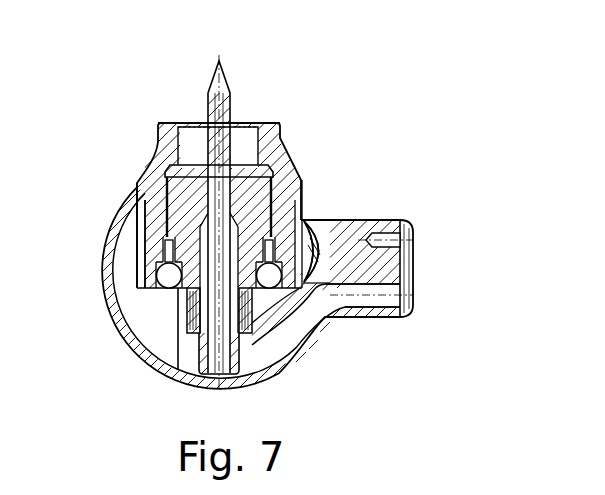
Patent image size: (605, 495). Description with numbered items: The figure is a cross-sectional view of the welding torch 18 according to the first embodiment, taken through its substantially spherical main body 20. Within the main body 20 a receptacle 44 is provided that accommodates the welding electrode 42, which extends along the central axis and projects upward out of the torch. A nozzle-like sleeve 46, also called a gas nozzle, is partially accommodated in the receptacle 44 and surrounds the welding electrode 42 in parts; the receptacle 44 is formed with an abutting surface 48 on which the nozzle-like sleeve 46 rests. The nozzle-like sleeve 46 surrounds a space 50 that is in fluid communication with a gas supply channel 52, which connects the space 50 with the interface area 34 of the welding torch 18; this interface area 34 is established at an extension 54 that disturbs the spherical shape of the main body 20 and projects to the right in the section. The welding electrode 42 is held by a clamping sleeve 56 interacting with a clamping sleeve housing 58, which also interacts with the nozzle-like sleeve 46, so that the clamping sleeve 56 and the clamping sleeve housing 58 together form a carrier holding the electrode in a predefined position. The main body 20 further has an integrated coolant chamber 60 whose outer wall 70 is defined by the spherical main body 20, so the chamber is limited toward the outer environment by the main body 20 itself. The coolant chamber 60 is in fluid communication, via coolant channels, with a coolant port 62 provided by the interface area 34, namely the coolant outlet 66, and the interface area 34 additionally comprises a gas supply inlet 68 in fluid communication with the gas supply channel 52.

The welding torch 18 is at (135, 84).
The substantially spherical main body 20 is at (128, 219).
The interface area 34 is at (420, 322).
The welding electrode 42 is at (228, 84).
The receptacle 44 is at (306, 181).
The nozzle-like sleeve 46 is at (274, 148).
The abutting surface 48 is at (149, 280).
The space 50 is at (140, 197).
The gas supply channel 52 is at (268, 352).
The extension 54 is at (385, 220).
The clamping sleeve 56 is at (197, 364).
The clamping sleeve housing 58 is at (198, 192).
The integrated coolant chamber 60 is at (141, 312).
The coolant port 62 is at (322, 242).
The coolant outlet 66 is at (350, 229).
The gas supply inlet 68 is at (430, 285).
The outer wall 70 is at (160, 337).